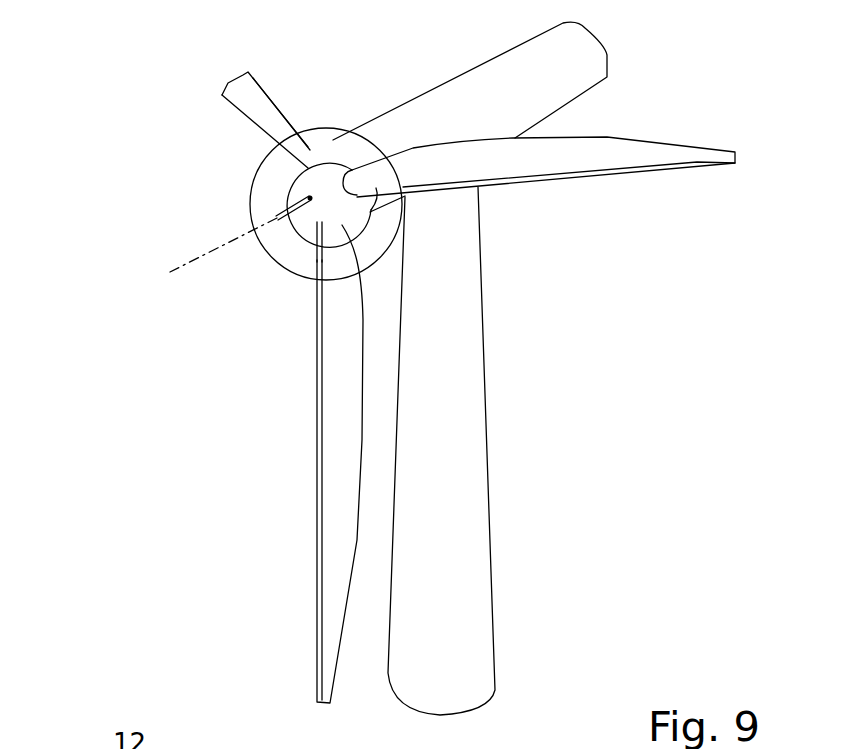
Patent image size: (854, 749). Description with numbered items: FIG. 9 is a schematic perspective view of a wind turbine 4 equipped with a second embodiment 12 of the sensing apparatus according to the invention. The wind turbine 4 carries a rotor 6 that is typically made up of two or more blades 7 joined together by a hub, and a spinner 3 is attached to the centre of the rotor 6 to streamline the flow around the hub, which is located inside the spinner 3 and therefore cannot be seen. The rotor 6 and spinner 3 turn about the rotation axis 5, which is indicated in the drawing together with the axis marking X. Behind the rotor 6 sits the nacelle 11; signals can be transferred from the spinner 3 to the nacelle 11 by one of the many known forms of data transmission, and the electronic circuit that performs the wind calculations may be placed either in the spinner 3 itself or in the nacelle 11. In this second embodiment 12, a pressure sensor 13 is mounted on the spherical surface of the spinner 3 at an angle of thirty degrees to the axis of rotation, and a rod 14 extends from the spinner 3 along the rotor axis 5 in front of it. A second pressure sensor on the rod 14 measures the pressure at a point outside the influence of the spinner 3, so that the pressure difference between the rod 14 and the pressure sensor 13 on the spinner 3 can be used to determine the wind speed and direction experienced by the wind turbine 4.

The spinner 3 is at (330, 148).
The wind turbine 4 is at (543, 247).
The rotation axis 5 is at (182, 268).
The rotor 6 is at (280, 173).
The blades 7 is at (252, 88).
The nacelle 11 is at (595, 58).
The second embodiment 12 is at (117, 122).
The pressure sensor 13 is at (312, 220).
The rod 14 is at (287, 218).
The axis X is at (252, 213).